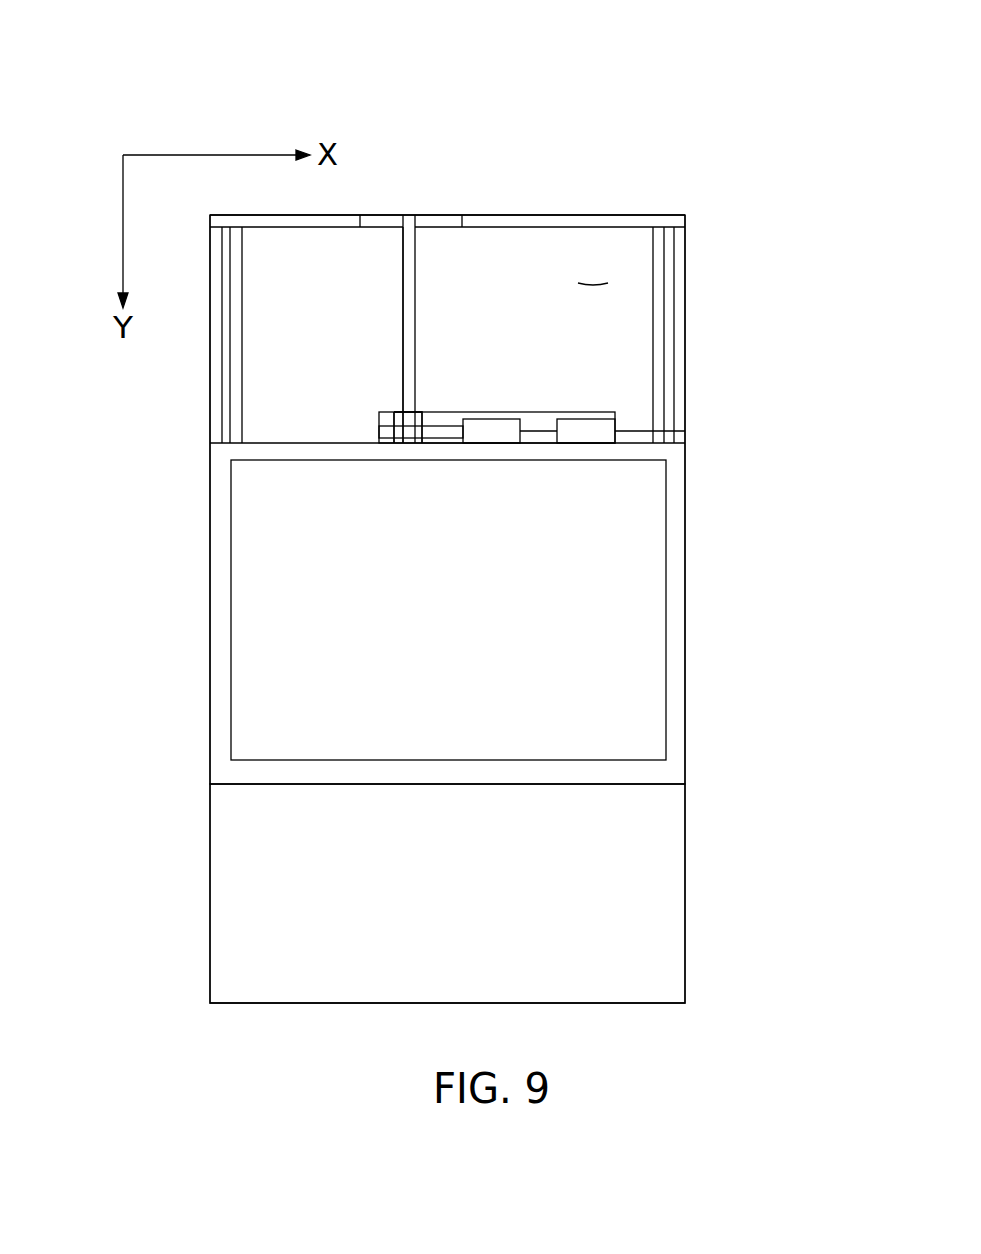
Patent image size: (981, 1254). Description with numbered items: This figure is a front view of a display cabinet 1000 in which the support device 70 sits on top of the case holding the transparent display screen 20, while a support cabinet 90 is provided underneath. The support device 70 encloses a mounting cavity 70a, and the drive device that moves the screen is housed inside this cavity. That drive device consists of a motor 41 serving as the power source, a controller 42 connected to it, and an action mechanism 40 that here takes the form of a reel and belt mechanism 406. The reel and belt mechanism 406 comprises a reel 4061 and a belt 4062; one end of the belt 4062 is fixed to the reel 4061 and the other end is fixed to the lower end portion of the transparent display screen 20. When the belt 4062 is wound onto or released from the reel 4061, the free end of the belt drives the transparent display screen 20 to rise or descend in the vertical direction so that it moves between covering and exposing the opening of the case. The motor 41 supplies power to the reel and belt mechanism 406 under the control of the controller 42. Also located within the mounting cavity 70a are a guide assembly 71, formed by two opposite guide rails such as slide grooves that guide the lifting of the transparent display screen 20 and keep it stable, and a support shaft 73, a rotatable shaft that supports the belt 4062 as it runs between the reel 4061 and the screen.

The display cabinet 1000 is at (133, 97).
The transparent display screen 20 is at (673, 658).
The action mechanism 40 is at (823, 352).
The motor 41 is at (502, 435).
The controller 42 is at (603, 432).
The reel and belt mechanism 406 is at (783, 345).
The reel 4061 is at (420, 423).
The belt 4062 is at (407, 377).
The support device 70 is at (675, 253).
The mounting cavity 70a is at (596, 282).
The guide assembly 71 is at (665, 300).
The support shaft 73 is at (432, 222).
The support cabinet 90 is at (638, 897).